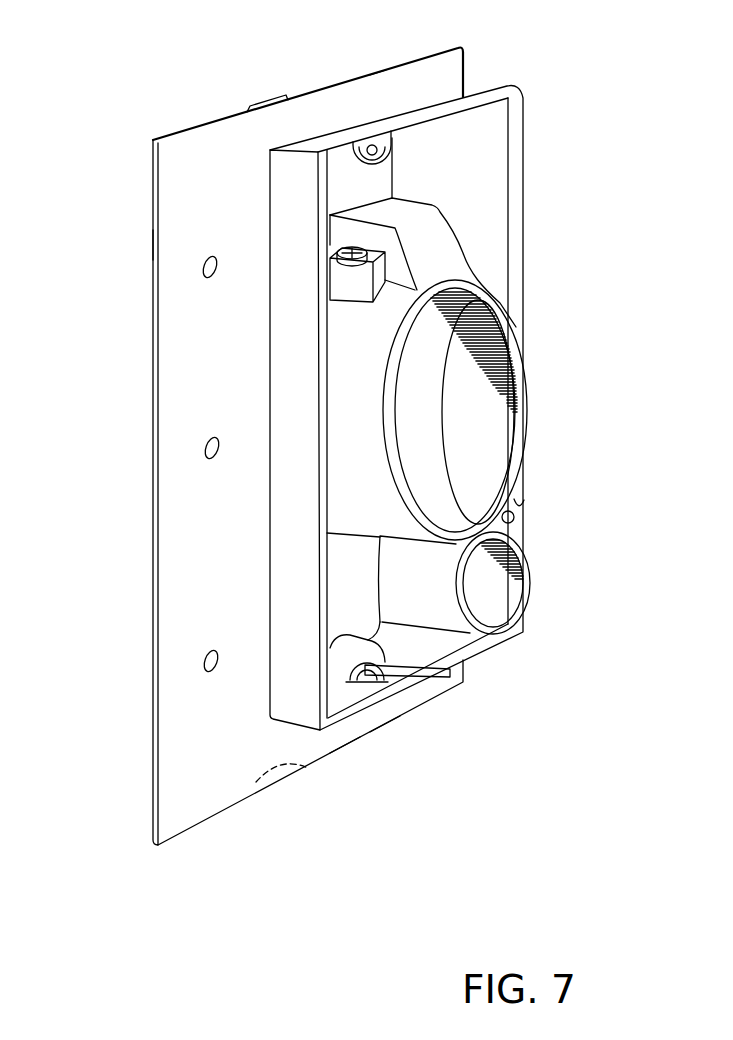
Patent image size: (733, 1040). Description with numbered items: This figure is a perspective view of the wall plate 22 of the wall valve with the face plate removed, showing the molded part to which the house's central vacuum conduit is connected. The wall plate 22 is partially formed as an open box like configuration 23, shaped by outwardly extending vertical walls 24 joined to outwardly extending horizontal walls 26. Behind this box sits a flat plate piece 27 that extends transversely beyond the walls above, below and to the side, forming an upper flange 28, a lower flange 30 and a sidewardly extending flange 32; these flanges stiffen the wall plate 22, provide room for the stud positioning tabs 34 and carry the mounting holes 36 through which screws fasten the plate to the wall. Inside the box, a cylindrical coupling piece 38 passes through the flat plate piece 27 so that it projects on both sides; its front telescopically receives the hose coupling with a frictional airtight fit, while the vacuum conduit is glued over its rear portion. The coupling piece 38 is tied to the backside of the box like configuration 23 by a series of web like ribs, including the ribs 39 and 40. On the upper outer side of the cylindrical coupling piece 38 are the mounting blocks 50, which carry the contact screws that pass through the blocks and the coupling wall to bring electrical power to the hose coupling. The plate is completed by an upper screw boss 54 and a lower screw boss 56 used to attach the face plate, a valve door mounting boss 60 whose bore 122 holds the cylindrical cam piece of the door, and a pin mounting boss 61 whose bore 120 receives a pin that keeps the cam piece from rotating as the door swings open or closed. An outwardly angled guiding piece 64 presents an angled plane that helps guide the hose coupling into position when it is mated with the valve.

The wall plate 22 is at (343, 768).
The open box like configuration 23 is at (527, 122).
The vertical walls 24 is at (524, 182).
The horizontal walls 26 is at (478, 88).
The flat plate piece 27 is at (151, 245).
The upper flange 28 is at (378, 90).
The lower flange 30 is at (383, 730).
The sidewardly extending flange 32 is at (178, 608).
The stud positioning tabs 34 is at (262, 100).
The mounting holes 36 is at (205, 275).
The cylindrical coupling piece 38 is at (526, 352).
The rib 39 is at (380, 187).
The rib 40 is at (392, 628).
The mounting blocks 50 is at (360, 288).
The upper screw boss 54 is at (373, 145).
The lower screw boss 56 is at (453, 675).
The valve door mounting boss 60 is at (407, 590).
The pin mounting boss 61 is at (523, 500).
The outwardly angled guiding piece 64 is at (442, 258).
The bore 120 is at (514, 517).
The bore 122 is at (529, 573).